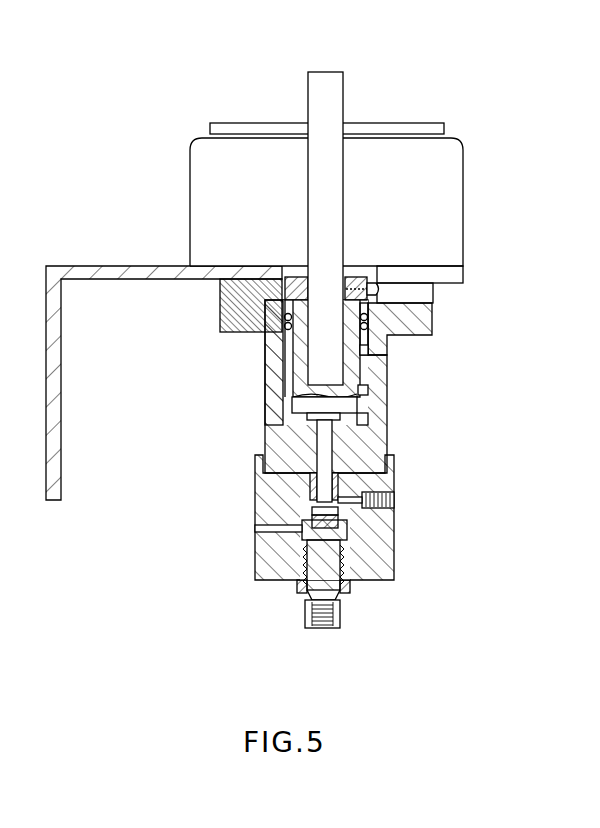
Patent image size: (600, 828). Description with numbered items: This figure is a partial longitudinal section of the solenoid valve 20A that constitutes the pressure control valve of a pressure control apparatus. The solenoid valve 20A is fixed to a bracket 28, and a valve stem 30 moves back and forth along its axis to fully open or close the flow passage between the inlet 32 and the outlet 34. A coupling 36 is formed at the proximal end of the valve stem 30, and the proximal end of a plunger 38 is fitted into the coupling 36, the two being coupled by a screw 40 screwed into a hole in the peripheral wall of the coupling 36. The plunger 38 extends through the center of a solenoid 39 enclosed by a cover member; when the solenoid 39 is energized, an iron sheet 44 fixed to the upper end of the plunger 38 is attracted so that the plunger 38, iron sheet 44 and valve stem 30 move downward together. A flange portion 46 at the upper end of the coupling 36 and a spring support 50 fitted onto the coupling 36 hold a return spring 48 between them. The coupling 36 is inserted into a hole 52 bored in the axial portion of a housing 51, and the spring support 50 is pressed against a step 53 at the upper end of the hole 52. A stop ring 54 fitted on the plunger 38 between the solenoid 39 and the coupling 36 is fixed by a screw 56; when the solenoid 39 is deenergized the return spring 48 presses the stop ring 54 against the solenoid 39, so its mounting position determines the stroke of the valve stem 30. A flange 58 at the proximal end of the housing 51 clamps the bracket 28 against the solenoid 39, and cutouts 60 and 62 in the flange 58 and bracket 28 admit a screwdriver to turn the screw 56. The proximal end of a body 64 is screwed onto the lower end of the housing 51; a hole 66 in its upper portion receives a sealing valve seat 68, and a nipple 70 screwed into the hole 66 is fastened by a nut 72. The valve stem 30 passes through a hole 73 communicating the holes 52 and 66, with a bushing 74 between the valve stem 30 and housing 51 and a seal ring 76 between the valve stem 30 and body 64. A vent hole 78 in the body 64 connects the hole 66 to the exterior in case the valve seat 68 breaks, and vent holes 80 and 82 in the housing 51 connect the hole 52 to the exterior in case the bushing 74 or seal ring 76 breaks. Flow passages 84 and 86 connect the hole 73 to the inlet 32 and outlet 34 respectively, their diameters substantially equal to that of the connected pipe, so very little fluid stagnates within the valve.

The solenoid valve 20A is at (411, 54).
The bracket 28 is at (62, 358).
The valve stem 30 is at (373, 432).
The inlet 32 is at (395, 500).
The outlet 34 is at (322, 630).
The coupling 36 is at (295, 410).
The plunger 38 is at (345, 82).
The solenoid 39 is at (466, 162).
The screw 40 is at (383, 357).
The iron sheet 44 is at (424, 127).
The flange portion 46 is at (372, 306).
The return spring 48 is at (368, 390).
The spring support 50 is at (281, 395).
The housing 51 is at (253, 341).
The hole 52 is at (292, 428).
The step 53 is at (372, 398).
The stop ring 54 is at (352, 278).
The screw 56 is at (383, 283).
The flange 58 is at (220, 300).
The cutout 60 is at (428, 293).
The cutout 62 is at (456, 276).
The body 64 is at (256, 470).
The hole 66 is at (340, 540).
The valve seat 68 is at (270, 506).
The nipple 70 is at (342, 614).
The nut 72 is at (350, 590).
The hole 73 is at (262, 492).
The bushing 74 is at (333, 452).
The seal ring 76 is at (378, 481).
The vent hole 78 is at (256, 528).
The vent hole 80 is at (378, 422).
The vent hole 82 is at (380, 362).
The flow passage 84 is at (385, 523).
The flow passage 86 is at (270, 556).